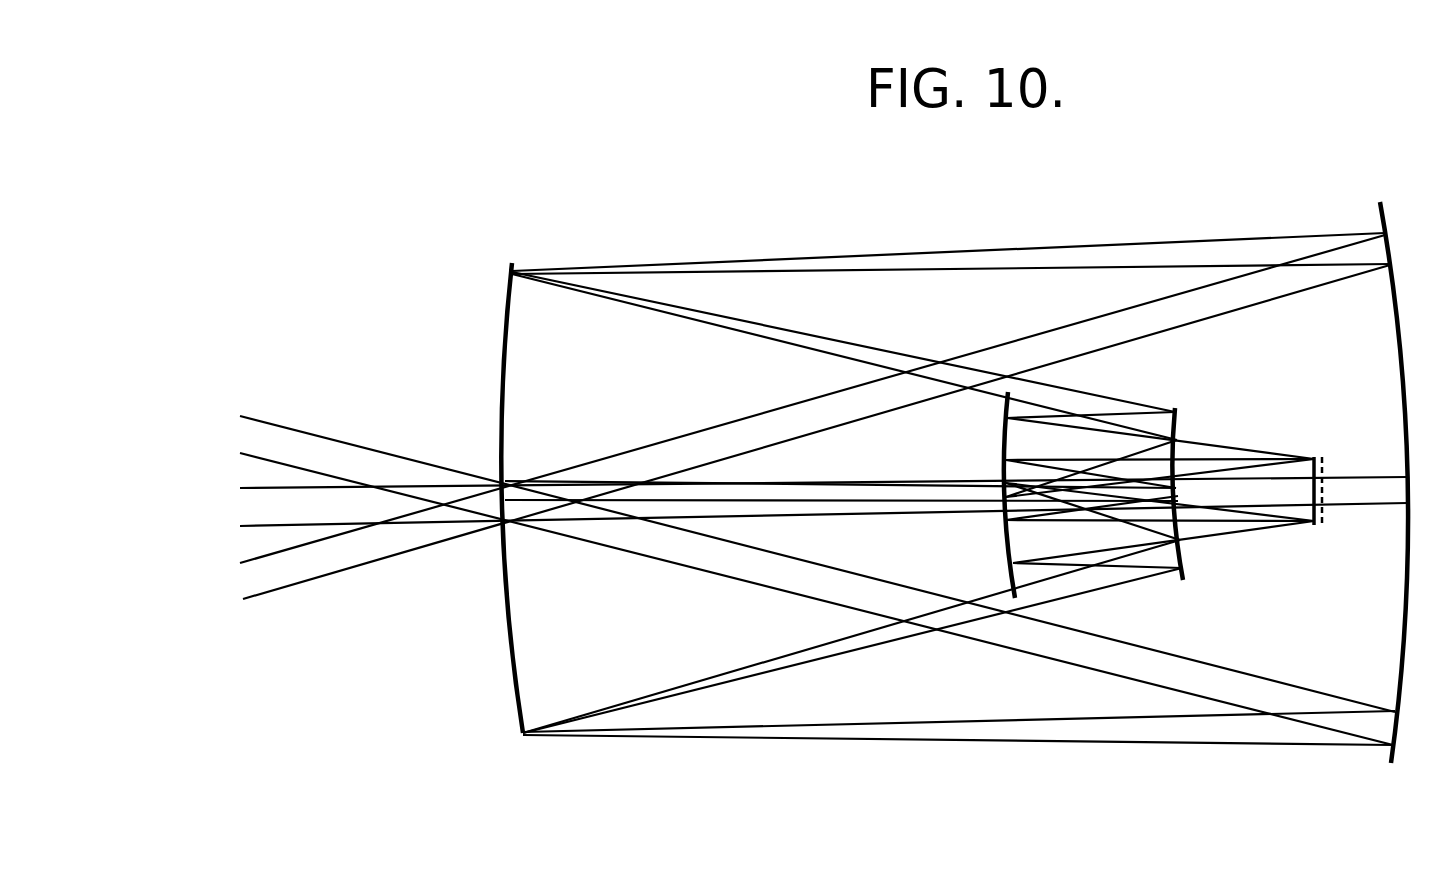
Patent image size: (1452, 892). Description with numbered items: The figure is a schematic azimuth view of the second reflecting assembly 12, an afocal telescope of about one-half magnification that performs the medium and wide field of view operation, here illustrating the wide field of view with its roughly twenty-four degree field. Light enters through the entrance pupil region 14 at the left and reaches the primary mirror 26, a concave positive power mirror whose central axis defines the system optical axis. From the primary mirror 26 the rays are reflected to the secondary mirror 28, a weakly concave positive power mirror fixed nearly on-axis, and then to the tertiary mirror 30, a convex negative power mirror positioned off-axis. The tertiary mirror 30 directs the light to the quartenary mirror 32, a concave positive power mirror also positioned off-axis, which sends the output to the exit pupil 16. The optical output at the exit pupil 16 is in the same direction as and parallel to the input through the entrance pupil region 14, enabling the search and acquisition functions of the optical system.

The second reflecting assembly 12 is at (965, 760).
The entrance pupil region 14 is at (192, 508).
The exit pupil 16 is at (1322, 457).
The primary mirror 26 is at (1387, 212).
The secondary mirror 28 is at (518, 710).
The tertiary mirror 30 is at (1183, 578).
The quartenary mirror 32 is at (1003, 558).